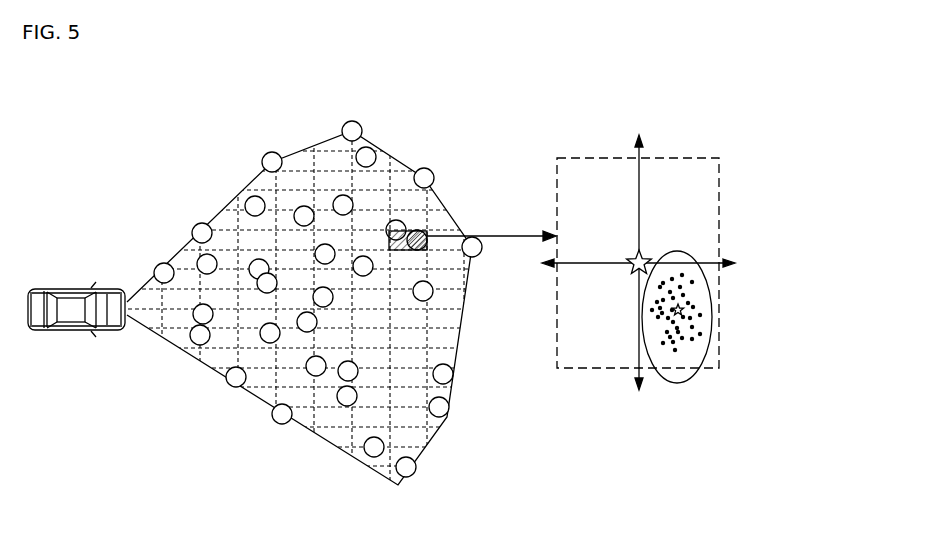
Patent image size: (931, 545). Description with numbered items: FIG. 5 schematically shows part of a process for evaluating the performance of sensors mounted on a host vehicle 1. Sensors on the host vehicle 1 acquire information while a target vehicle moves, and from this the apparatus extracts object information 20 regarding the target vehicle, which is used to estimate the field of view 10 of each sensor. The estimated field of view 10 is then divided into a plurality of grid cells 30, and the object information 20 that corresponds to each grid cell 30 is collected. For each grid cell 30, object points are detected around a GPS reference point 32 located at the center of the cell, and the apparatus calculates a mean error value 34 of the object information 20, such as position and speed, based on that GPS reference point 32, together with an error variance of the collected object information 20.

The host vehicle 1 is at (60, 287).
The field of view (FoV) 10 is at (248, 185).
The object information 20 is at (266, 160).
The grid cell 30 is at (408, 229).
The GPS reference point 32 is at (648, 251).
The mean error value 34 is at (684, 308).